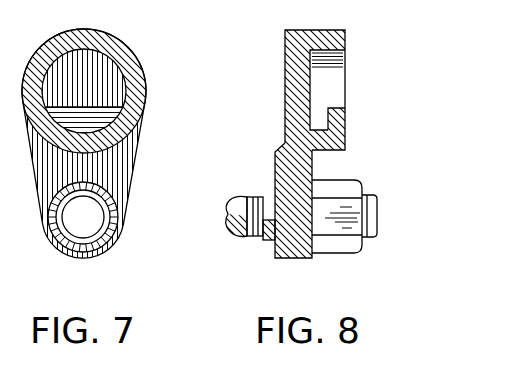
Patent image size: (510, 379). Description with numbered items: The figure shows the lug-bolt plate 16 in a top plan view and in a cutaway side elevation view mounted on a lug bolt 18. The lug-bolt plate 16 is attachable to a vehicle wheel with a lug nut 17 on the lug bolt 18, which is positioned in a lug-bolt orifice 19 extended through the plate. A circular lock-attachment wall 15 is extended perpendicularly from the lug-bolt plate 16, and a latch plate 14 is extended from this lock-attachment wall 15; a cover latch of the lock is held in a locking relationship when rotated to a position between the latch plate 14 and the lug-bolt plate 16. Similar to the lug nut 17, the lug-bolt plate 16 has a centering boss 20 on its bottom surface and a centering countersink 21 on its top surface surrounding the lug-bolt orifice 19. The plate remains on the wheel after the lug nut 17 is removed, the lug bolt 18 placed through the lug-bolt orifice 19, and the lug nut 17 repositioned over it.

In FIG. 7, the latch plate 14 is at (85, 113).
In FIG. 8, the latch plate 14 is at (338, 118).
In FIG. 7, the lock-attachment wall 15 is at (122, 51).
In FIG. 8, the lock-attachment wall 15 is at (327, 35).
In FIG. 7, the lug-bolt plate 16 is at (95, 78).
In FIG. 8, the lug-bolt plate 16 is at (293, 101).
In FIG. 8, the lug nut 17 is at (335, 190).
In FIG. 8, the lug bolt 18 is at (228, 218).
In FIG. 7, the lug-bolt orifice 19 is at (84, 217).
In FIG. 8, the centering boss 20 is at (270, 243).
In FIG. 7, the centering countersink 21 is at (100, 192).